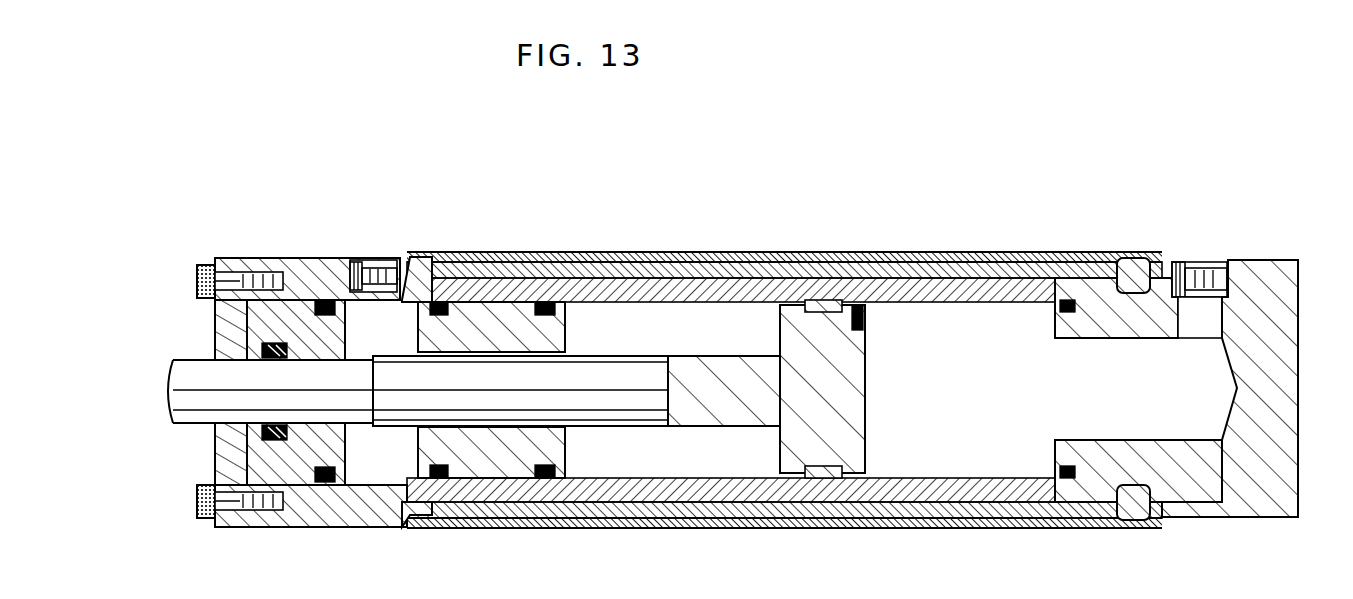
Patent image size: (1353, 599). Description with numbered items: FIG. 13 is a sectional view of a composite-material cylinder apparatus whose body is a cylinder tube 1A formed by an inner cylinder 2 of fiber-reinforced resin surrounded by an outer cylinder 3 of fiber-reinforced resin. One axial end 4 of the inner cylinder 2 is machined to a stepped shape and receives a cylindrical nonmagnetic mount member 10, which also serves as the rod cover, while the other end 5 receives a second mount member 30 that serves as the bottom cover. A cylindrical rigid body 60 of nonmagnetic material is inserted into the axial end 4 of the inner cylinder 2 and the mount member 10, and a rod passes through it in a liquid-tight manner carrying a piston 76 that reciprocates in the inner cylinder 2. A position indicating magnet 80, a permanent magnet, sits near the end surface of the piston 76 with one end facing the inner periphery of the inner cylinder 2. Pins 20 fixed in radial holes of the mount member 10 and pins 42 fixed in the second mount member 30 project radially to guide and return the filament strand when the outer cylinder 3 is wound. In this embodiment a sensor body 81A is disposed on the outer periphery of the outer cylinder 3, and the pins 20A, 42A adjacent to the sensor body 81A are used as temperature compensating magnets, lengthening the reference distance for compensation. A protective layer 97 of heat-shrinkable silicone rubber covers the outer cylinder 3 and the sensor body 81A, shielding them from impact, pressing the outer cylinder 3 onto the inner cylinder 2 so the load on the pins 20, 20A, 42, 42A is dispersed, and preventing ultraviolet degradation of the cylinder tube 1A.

The cylinder tube 1A is at (931, 238).
The inner cylinder 2 is at (1038, 253).
The outer cylinder 3 is at (838, 253).
The axial end 4 is at (583, 262).
The other end 5 is at (1083, 253).
The mount member 10 is at (333, 266).
The pin 20 is at (505, 506).
The pin 20A is at (509, 262).
The second mount member 30 is at (1265, 283).
The pin 42 is at (1123, 528).
The pin 42A is at (1130, 265).
The rigid body 60 is at (368, 487).
The piston 76 is at (852, 440).
The position indicating magnet 80 is at (866, 317).
The sensor body 81A is at (715, 253).
The protective layer 97 is at (747, 528).